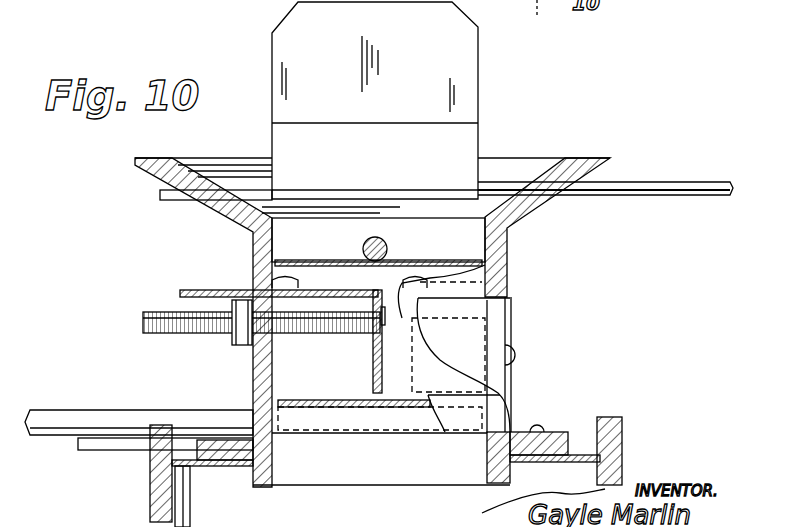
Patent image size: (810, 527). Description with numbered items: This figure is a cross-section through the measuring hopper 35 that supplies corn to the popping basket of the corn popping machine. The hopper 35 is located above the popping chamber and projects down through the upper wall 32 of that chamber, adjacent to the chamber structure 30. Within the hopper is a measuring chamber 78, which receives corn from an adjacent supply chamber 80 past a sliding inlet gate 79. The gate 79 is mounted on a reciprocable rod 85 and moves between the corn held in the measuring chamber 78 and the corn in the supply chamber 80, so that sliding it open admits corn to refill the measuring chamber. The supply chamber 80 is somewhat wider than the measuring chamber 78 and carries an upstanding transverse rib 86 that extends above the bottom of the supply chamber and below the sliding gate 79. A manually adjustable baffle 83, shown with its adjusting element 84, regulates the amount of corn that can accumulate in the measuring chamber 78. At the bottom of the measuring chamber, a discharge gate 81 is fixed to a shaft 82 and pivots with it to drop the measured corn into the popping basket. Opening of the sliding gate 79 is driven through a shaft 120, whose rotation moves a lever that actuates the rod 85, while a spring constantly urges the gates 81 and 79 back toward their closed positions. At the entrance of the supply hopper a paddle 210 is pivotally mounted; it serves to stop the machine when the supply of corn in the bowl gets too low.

The measuring hopper 35 is at (563, 142).
The paddle 210 is at (460, 62).
The supply chamber 80 is at (524, 178).
The sliding inlet gate 79 is at (436, 266).
The reciprocable rod 85 is at (364, 248).
The transverse rib 86 is at (266, 288).
The manually adjustable baffle 83 is at (372, 356).
The threaded rod 84 is at (264, 322).
The discharge gate 81 is at (320, 400).
The measuring chamber 78 is at (408, 370).
The shaft 82 is at (68, 420).
The shaft 120 is at (88, 455).
The support post 30 is at (152, 490).
The upper wall 32 is at (222, 467).